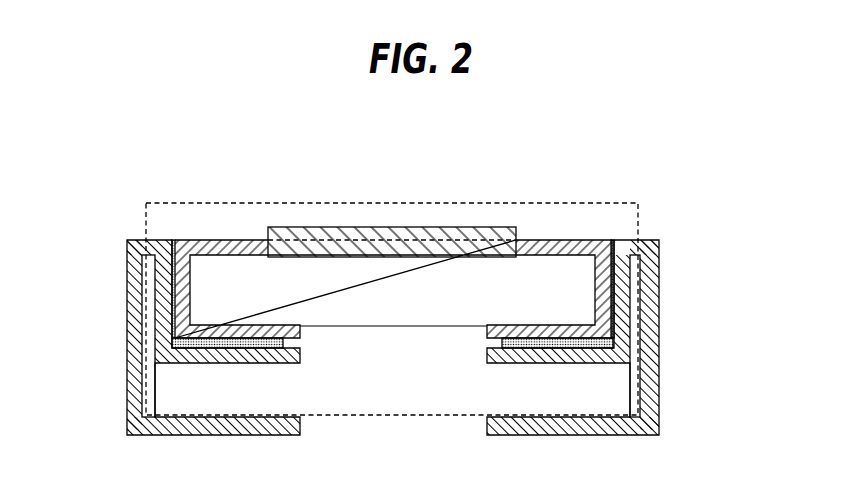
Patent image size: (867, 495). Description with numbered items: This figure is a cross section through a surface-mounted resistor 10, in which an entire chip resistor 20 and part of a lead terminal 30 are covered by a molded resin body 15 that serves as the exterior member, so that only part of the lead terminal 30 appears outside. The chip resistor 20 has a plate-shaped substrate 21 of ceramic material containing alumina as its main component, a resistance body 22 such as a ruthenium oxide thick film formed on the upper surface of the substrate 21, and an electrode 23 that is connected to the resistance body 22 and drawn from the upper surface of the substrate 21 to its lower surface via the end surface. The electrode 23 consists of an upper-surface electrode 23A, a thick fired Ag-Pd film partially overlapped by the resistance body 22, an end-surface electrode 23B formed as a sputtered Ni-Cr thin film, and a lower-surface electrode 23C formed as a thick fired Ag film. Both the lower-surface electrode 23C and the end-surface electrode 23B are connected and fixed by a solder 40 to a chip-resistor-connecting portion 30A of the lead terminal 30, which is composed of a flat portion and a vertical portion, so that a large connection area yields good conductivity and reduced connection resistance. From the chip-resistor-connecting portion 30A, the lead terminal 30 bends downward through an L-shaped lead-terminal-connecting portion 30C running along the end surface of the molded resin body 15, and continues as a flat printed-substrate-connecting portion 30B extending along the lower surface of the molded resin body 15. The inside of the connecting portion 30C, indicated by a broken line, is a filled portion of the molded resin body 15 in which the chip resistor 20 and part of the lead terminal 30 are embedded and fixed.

The surface-mounted resistor 10 is at (684, 196).
The molded resin body 15 is at (263, 203).
The chip resistor 20 is at (567, 220).
The substrate 21 is at (432, 327).
The resistance body 22 is at (403, 227).
The electrode 23 is at (593, 298).
The upper-surface electrode 23A is at (258, 251).
The end-surface electrode 23B is at (183, 296).
The lower-surface electrode 23C is at (284, 331).
The lead terminal 30 is at (661, 360).
The chip-resistor-connecting portion 30A is at (163, 299).
The printed-substrate-connecting portion 30B is at (212, 417).
The lead-terminal-connecting portion 30C is at (127, 364).
The solder 40 is at (284, 343).